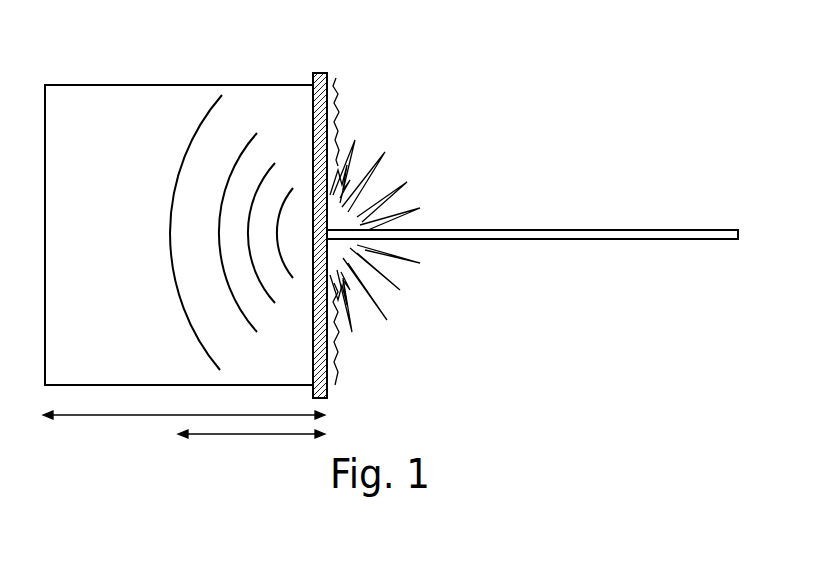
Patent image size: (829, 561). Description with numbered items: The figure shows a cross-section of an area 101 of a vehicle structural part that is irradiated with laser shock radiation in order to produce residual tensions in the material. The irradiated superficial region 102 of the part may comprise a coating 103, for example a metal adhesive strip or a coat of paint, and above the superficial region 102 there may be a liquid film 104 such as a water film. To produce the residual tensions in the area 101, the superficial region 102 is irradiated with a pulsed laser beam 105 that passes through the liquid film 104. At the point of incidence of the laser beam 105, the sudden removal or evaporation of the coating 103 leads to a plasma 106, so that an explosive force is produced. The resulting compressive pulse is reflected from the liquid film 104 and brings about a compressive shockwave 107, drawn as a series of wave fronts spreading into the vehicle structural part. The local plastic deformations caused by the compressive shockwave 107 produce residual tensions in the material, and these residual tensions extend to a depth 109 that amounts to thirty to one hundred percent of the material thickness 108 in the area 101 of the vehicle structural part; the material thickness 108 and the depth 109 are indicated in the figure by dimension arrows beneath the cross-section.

The area 101 is at (208, 66).
The irradiated superficial region 102 is at (327, 103).
The coating 103 is at (322, 72).
The liquid film 104 is at (334, 368).
The pulsed laser beam 105 is at (562, 230).
The plasma 106 is at (388, 288).
The compressive shockwave 107 is at (170, 253).
The material thickness 108 is at (82, 418).
The depth 109 is at (222, 436).